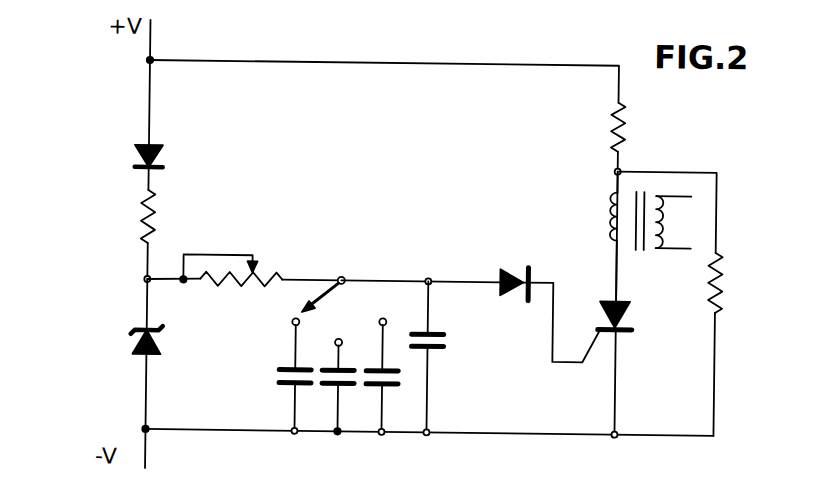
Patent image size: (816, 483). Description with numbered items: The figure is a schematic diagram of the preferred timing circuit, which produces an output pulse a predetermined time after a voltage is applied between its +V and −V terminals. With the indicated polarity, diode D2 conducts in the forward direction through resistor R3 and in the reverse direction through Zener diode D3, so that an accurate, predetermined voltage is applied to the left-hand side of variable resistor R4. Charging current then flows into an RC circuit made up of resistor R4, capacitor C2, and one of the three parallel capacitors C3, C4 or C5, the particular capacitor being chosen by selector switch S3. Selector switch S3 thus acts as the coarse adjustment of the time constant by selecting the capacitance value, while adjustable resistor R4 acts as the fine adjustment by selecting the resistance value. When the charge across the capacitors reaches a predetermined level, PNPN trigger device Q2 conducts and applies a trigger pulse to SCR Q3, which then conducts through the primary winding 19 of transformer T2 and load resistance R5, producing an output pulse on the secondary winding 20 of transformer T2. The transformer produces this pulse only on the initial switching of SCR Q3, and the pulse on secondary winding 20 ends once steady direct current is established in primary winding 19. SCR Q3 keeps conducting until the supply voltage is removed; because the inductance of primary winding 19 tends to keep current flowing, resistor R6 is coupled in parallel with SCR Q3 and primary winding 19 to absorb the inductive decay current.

The diode D2 is at (135, 160).
The resistor R3 is at (138, 238).
The Zener diode D3 is at (130, 338).
The variable resistor R4 is at (252, 286).
The selector switch S3 is at (336, 254).
The capacitor C3 is at (273, 386).
The capacitor C4 is at (318, 386).
The capacitor C5 is at (364, 386).
The capacitor C2 is at (448, 342).
The PNPN trigger device Q2 is at (546, 301).
The SCR Q3 is at (632, 305).
The load resistance R5 is at (614, 140).
The transformer T2 is at (644, 221).
The primary winding 19 is at (611, 220).
The secondary winding 20 is at (672, 232).
The resistor R6 is at (732, 284).